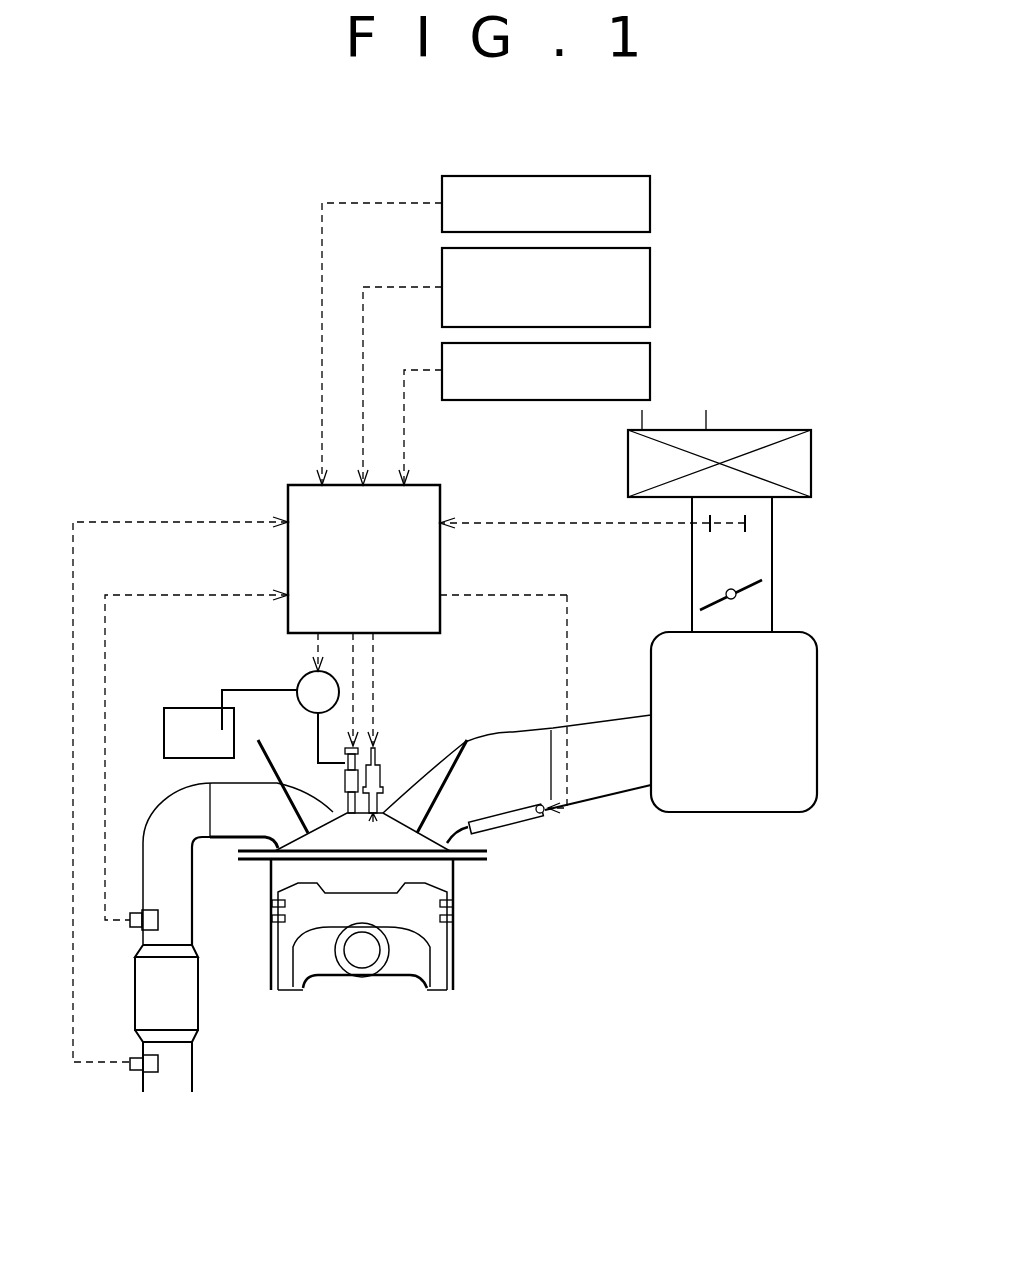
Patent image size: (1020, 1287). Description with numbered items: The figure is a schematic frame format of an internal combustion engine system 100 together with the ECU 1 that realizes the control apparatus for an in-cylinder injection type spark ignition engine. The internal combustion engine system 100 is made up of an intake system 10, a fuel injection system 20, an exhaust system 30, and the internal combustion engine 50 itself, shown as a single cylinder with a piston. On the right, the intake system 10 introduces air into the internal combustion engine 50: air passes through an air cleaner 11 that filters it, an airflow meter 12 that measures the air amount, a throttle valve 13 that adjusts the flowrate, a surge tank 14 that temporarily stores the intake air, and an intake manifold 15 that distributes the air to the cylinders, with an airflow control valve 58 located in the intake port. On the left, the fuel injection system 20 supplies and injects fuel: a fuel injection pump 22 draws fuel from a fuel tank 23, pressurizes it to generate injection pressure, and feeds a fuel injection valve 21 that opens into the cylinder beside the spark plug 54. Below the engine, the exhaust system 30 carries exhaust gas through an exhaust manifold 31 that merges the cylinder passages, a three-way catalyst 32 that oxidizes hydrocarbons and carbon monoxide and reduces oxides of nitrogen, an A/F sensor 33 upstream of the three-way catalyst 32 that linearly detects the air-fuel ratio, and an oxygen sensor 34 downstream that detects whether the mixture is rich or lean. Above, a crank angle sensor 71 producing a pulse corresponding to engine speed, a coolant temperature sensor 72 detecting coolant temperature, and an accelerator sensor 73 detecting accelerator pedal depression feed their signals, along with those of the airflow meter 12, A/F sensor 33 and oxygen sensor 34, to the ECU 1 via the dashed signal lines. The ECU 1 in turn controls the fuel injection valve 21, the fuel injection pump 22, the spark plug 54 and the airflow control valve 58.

The ECU 1 is at (288, 512).
The intake system 10 is at (784, 385).
The air cleaner 11 is at (811, 458).
The airflow meter 12 is at (748, 526).
The throttle valve 13 is at (745, 590).
The surge tank 14 is at (750, 777).
The intake manifold 15 is at (607, 772).
The fuel injection system 20 is at (172, 690).
The fuel injection valve 21 is at (345, 780).
The fuel injection pump 22 is at (301, 683).
The fuel tank 23 is at (197, 708).
The exhaust system 30 is at (170, 1107).
The exhaust manifold 31 is at (230, 820).
The three-way catalyst 32 is at (180, 998).
The A/F sensor 33 is at (140, 910).
The oxygen sensor 34 is at (130, 1055).
The internal combustion engine 50 is at (466, 936).
The spark plug 54 is at (383, 782).
The airflow control valve 58 is at (508, 817).
The crank angle sensor 71 is at (650, 203).
The coolant temperature sensor 72 is at (650, 286).
The accelerator sensor 73 is at (650, 368).
The internal combustion engine system 100 is at (741, 1015).